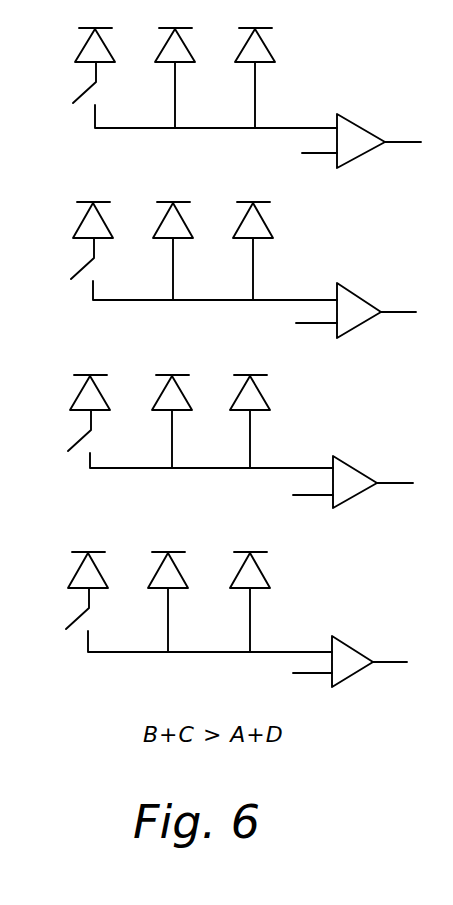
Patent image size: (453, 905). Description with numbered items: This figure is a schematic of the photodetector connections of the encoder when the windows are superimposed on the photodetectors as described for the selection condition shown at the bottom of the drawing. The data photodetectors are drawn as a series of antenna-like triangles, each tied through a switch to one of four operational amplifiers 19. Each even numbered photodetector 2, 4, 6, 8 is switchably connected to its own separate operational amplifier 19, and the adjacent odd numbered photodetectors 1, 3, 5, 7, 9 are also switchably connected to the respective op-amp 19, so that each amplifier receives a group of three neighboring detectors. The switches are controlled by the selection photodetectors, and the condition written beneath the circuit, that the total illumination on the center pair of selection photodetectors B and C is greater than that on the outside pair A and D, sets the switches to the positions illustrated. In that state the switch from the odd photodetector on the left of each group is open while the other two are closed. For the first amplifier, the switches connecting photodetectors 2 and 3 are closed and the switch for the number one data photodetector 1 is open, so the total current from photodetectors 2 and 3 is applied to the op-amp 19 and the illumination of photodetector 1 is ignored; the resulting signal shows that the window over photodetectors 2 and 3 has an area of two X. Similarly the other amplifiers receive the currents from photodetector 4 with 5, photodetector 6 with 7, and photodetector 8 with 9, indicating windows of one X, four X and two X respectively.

The data photodetector 1 is at (94, 65).
The data photodetector 2 is at (175, 78).
The data photodetector 3 is at (173, 153).
The data photodetector 4 is at (173, 251).
The data photodetector 5 is at (170, 326).
The data photodetector 6 is at (172, 421).
The data photodetector 7 is at (168, 502).
The data photodetector 8 is at (168, 602).
The data photodetector 9 is at (250, 602).
The operational amplifier 19 is at (361, 135).